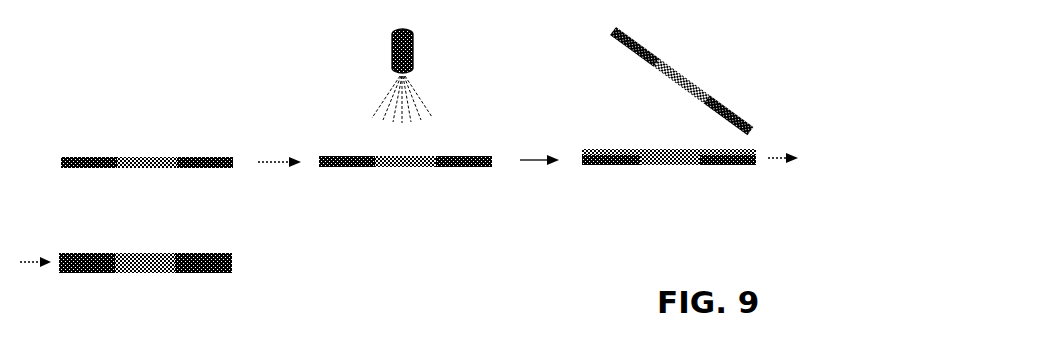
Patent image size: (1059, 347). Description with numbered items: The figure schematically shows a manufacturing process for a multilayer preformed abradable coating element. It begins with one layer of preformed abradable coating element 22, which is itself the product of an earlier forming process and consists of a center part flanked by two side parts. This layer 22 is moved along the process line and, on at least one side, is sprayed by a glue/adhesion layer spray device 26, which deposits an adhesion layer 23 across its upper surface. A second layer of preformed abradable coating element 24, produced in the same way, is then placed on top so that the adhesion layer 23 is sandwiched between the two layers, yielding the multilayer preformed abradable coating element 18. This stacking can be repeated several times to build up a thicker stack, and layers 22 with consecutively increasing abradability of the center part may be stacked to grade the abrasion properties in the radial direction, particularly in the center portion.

The preformed abradable coating element 18 is at (200, 274).
The one layer of preformed abradable coating element 22 is at (147, 163).
The adhesion layer 23 is at (600, 149).
The second layer of preformed abradable coating element 24 is at (681, 87).
The glue/adhesion layer spray device 26 is at (413, 52).